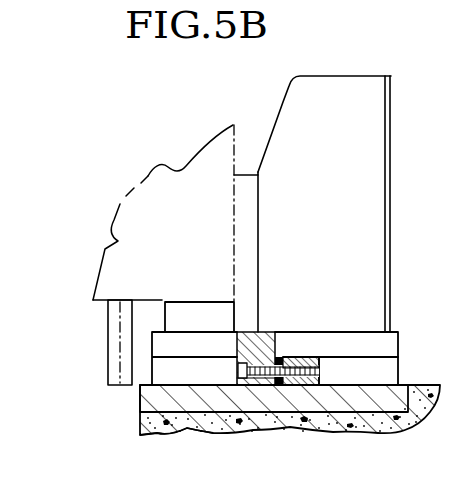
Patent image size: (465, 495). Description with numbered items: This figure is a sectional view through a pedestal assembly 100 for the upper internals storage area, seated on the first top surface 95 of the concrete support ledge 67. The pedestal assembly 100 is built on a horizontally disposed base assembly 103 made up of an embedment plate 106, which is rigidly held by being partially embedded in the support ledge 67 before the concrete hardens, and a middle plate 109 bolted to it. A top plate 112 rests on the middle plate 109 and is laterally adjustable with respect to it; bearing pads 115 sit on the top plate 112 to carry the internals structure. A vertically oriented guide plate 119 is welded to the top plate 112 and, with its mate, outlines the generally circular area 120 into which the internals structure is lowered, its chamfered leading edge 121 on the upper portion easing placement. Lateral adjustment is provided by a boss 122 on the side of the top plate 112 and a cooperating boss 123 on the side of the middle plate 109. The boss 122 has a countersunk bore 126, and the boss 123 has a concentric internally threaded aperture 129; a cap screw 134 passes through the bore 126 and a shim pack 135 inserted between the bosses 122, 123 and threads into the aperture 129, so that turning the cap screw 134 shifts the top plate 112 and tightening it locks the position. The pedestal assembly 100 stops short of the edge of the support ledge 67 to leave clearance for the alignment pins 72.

The support ledge 67 is at (184, 432).
The alignment pins 72 is at (118, 385).
The first top surface 95 is at (380, 410).
The pedestal assembly 100 is at (214, 256).
The base assembly 103 is at (145, 362).
The embedment plate 106 is at (352, 403).
The middle plate 109 is at (380, 363).
The top plate 112 is at (348, 340).
The bearing pads 115 is at (168, 310).
The guide plates 119 is at (377, 124).
The generally circular area 120 is at (260, 173).
The chamfered leading edge 121 is at (283, 103).
The boss 122 is at (253, 387).
The boss 123 is at (295, 362).
The countersunk bore 126 is at (263, 355).
The internally threaded aperture 129 is at (290, 378).
The cap screw 134 is at (238, 368).
The shim pack 135 is at (273, 357).